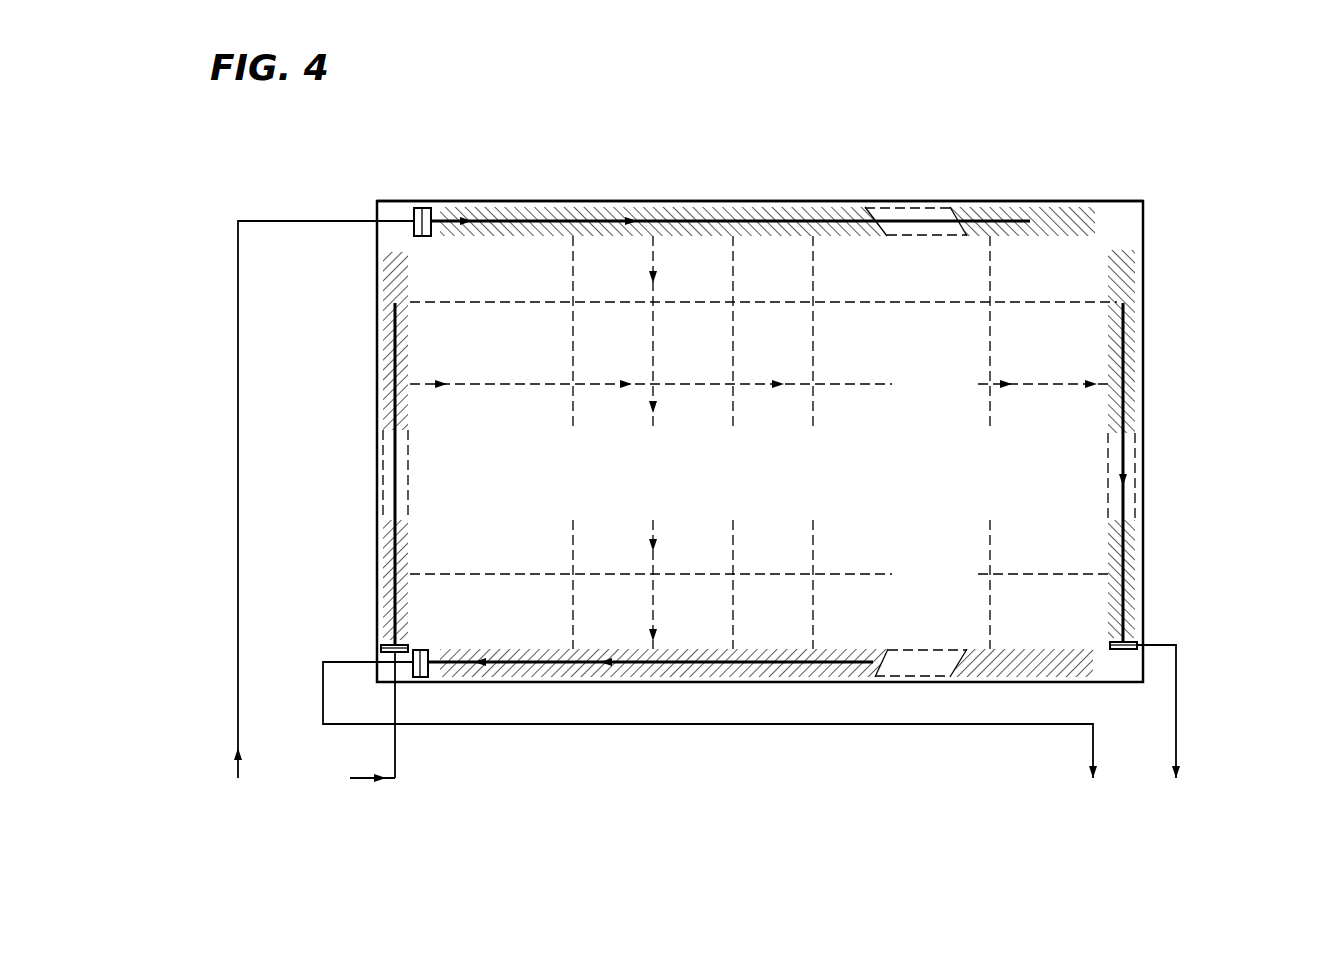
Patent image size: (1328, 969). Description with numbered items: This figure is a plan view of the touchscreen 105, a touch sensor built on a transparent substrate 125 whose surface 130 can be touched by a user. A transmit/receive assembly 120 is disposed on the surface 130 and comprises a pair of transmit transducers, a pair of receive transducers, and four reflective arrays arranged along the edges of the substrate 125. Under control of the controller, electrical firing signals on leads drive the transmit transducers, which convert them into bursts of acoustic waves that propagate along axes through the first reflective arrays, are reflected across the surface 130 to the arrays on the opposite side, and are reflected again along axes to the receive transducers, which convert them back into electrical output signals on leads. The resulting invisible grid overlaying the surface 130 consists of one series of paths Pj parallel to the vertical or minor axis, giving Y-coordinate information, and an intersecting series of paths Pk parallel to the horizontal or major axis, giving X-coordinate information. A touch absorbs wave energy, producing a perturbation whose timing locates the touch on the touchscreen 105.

The touchscreen 105 is at (207, 168).
The transmit/receive assembly 120 is at (385, 658).
The substrate 125 is at (717, 201).
The substrate surface 130 is at (940, 250).
The series of paths Pj is at (733, 278).
The series of paths Pk is at (548, 300).